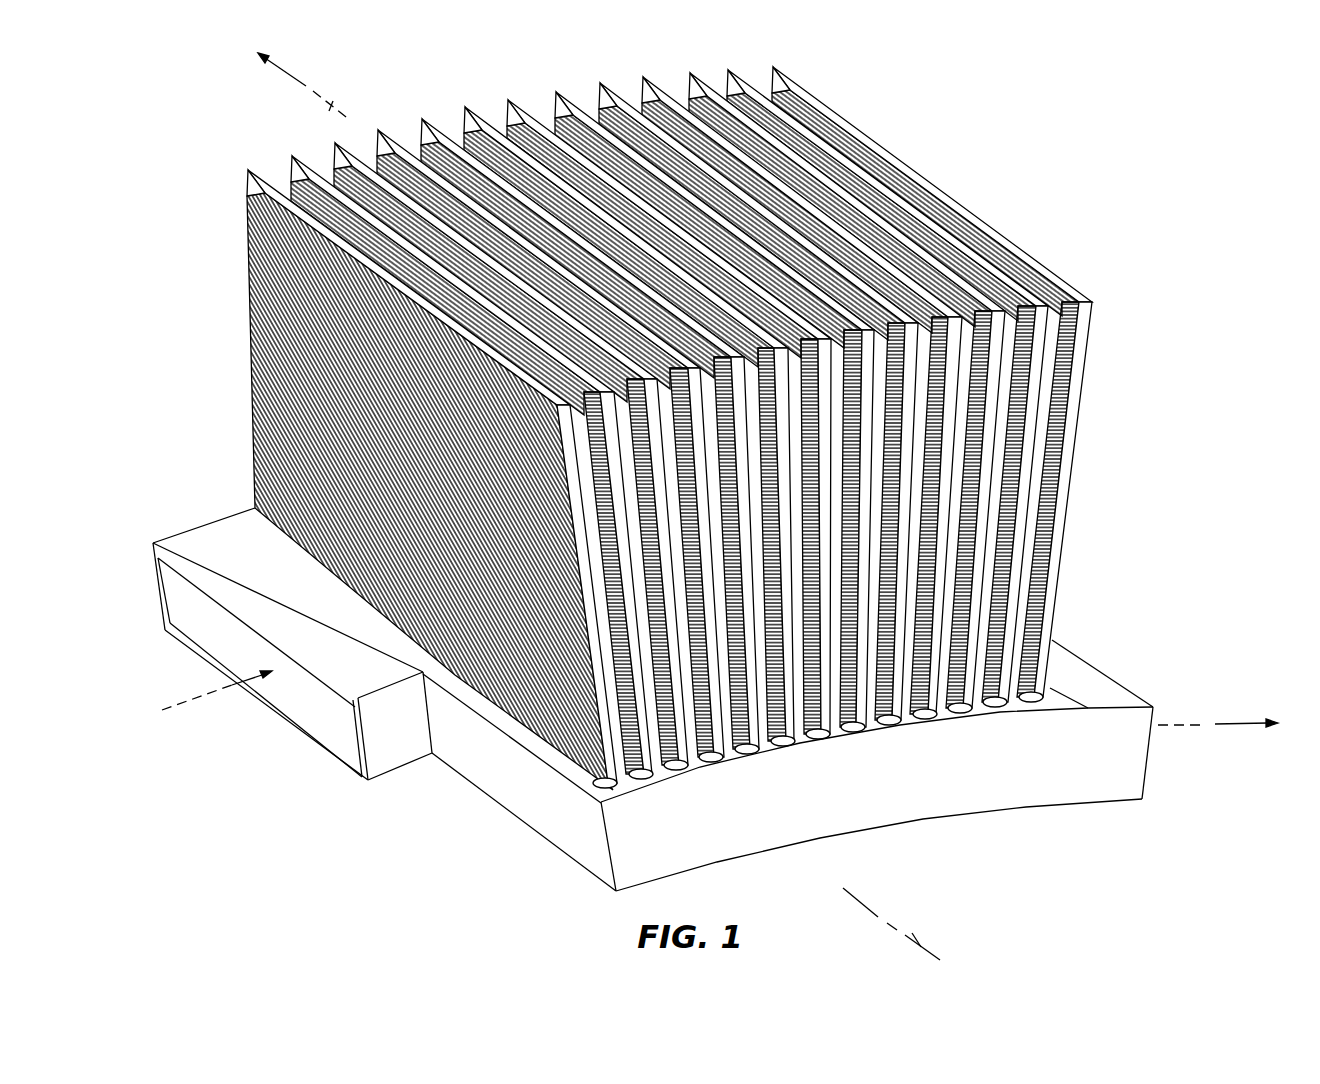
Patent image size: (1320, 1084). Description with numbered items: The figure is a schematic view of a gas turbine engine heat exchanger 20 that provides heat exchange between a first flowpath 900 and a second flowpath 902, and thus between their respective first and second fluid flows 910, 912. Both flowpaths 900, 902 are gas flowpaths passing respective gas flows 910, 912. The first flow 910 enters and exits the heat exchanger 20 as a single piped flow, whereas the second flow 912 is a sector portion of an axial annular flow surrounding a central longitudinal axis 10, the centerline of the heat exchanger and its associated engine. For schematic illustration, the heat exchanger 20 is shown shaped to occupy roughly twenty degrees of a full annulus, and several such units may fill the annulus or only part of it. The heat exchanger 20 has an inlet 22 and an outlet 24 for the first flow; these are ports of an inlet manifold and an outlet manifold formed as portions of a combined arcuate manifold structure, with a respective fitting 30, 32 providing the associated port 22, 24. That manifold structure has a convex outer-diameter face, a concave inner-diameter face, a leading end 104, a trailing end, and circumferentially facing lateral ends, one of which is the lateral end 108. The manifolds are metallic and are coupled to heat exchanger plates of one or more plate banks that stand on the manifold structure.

The central longitudinal axis 10 is at (920, 937).
The gas turbine engine heat exchanger 20 is at (646, 428).
The inlet 22 is at (172, 594).
The outlet 24 is at (1096, 618).
The fitting 30 is at (286, 611).
The fitting 32 is at (1108, 693).
The leading end 104 is at (955, 780).
The lateral end 108 is at (500, 775).
The first flowpath 900 is at (183, 703).
The second flowpath 902 is at (333, 107).
The first fluid flow 910 is at (240, 688).
The second fluid flow 912 is at (290, 77).